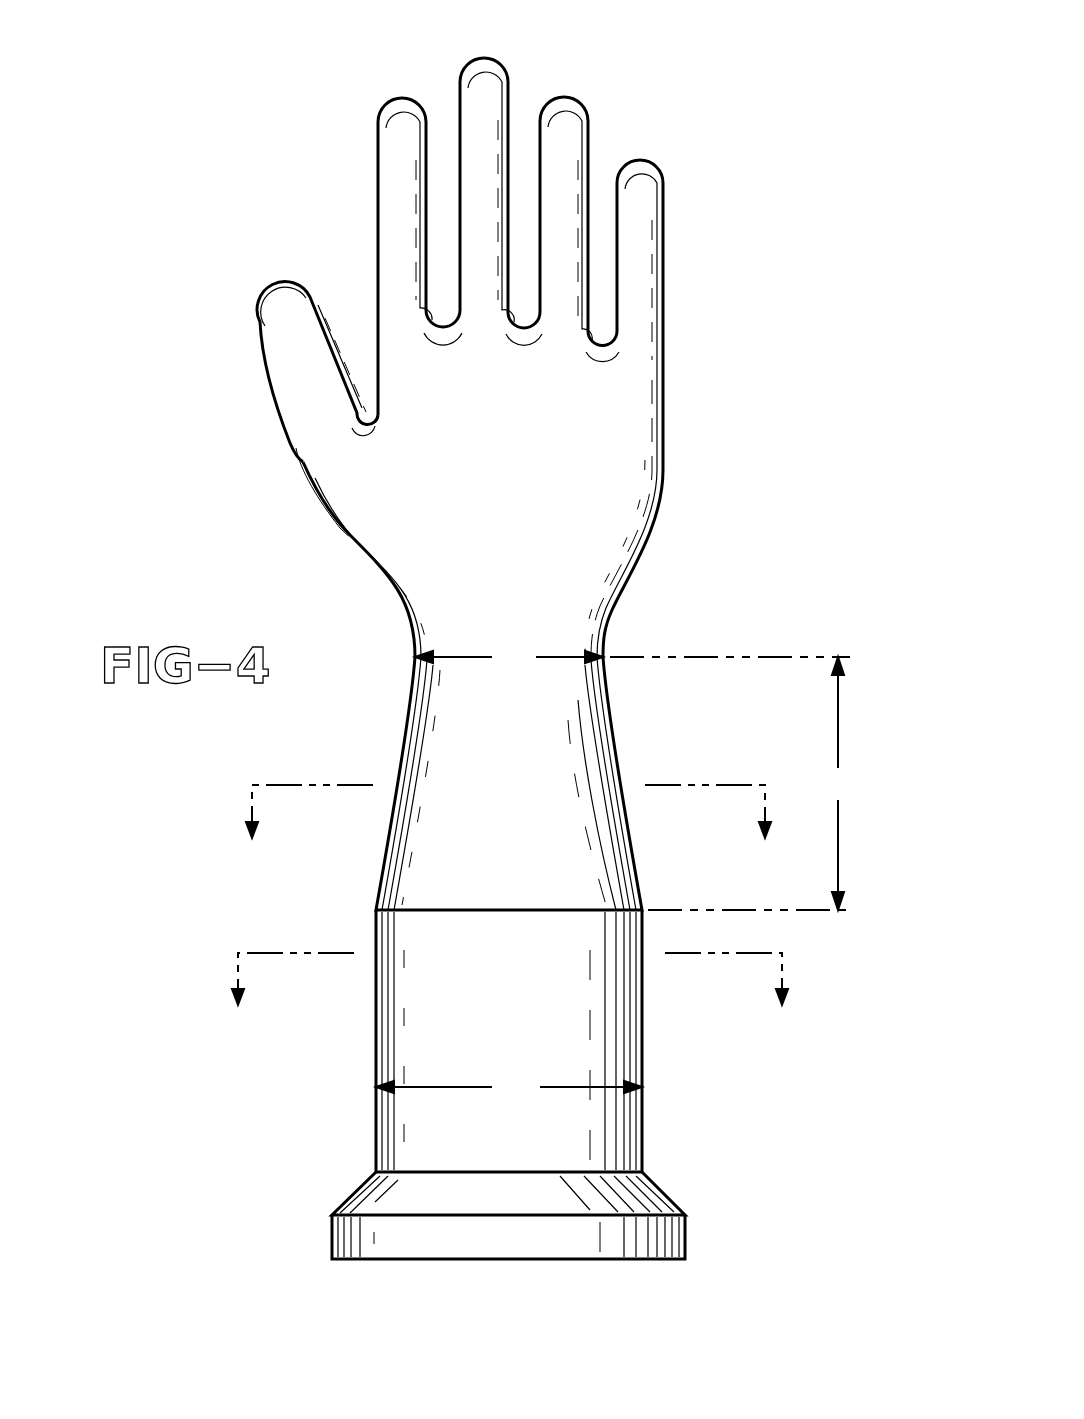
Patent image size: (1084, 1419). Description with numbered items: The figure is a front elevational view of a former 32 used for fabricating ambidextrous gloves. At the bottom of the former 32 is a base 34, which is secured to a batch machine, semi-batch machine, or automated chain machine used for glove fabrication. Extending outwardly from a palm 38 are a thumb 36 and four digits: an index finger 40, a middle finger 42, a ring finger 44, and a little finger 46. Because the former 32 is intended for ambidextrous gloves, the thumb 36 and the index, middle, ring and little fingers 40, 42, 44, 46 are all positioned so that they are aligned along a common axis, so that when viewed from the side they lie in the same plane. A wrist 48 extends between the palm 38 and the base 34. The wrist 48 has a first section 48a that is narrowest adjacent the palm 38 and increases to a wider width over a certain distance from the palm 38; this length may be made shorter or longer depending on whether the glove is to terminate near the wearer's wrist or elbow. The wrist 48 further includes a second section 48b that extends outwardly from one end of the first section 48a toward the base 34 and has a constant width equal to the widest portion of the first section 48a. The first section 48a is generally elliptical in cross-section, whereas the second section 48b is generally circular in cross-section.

The former 32 is at (723, 285).
The base 34 is at (670, 1197).
The thumb 36 is at (280, 296).
The palm 38 is at (508, 453).
The index finger 40 is at (398, 108).
The middle finger 42 is at (480, 66).
The ring finger 44 is at (562, 103).
The little finger 46 is at (636, 170).
The wrist 48 is at (470, 762).
The first section 48a is at (452, 848).
The second section 48b is at (430, 1044).